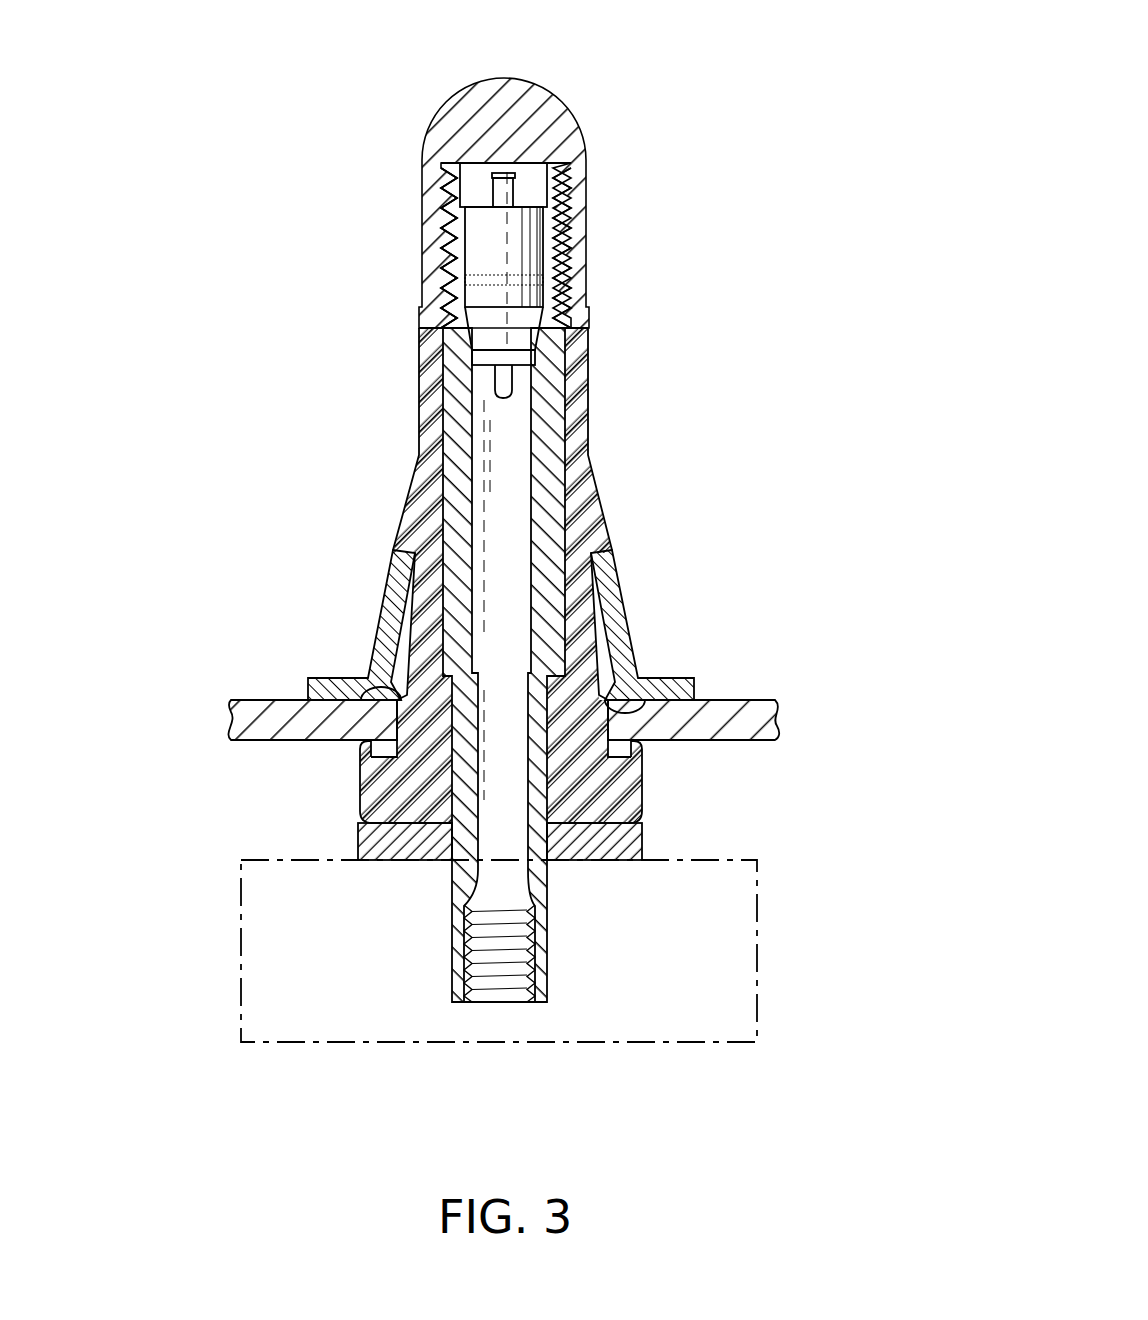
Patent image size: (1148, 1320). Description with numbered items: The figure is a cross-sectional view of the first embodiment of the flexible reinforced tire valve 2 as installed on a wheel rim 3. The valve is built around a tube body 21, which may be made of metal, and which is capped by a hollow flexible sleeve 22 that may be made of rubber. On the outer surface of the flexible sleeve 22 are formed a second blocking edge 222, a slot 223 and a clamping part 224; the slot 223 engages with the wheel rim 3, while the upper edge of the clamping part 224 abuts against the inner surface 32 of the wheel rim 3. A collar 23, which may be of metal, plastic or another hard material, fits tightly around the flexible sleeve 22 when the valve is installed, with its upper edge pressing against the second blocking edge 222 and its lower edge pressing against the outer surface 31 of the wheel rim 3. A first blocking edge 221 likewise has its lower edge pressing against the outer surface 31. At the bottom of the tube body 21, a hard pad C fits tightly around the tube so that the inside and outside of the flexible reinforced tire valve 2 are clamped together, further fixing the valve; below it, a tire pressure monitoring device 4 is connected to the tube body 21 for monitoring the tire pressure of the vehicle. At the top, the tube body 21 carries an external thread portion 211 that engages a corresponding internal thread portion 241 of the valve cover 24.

The flexible reinforced tire valve 2 is at (680, 334).
The tube body 21 is at (457, 415).
The external thread portion 211 is at (570, 234).
The internal thread portion 241 is at (506, 245).
The flexible sleeve 22 is at (577, 745).
The first blocking edge 221 is at (656, 682).
The second blocking edge 222 is at (612, 566).
The slot 223 is at (408, 715).
The clamping part 224 is at (357, 793).
The collar 23 is at (397, 614).
The valve cover 24 is at (560, 97).
The wheel rim 3 is at (724, 705).
The outer surface 31 is at (257, 699).
The inner surface 32 is at (730, 737).
The tire pressure monitoring device 4 is at (238, 912).
The hard pad C is at (645, 826).